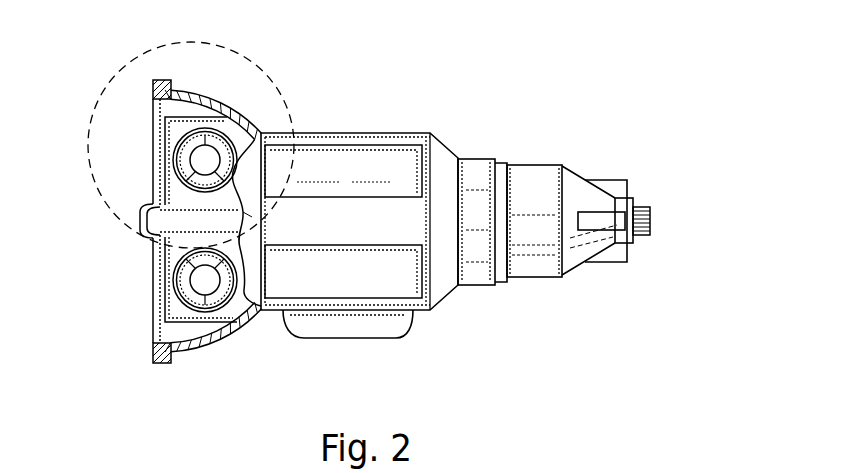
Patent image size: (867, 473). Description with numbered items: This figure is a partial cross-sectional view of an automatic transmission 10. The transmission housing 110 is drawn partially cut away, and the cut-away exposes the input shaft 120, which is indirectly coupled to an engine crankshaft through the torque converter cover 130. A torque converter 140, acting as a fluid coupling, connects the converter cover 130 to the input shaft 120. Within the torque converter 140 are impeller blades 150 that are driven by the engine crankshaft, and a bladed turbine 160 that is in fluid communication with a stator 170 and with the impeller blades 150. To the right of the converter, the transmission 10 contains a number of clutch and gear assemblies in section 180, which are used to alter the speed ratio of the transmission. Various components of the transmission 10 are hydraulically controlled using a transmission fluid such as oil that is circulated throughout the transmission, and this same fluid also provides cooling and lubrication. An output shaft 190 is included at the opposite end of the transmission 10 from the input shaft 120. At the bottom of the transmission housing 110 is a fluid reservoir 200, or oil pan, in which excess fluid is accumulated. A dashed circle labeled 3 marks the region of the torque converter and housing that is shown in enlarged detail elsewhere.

The transmission 10 is at (517, 72).
The detail region shown in FIG. 3 is at (120, 211).
The transmission housing 110 is at (484, 180).
The input shaft 120 is at (168, 209).
The torque converter cover 130 is at (142, 208).
The torque converter 140 is at (199, 337).
The impeller blades 150 is at (229, 137).
The bladed turbine 160 is at (152, 86).
The stator 170 is at (252, 217).
The section 180 is at (387, 163).
The output shaft 190 is at (652, 220).
The fluid reservoir 200 is at (377, 339).